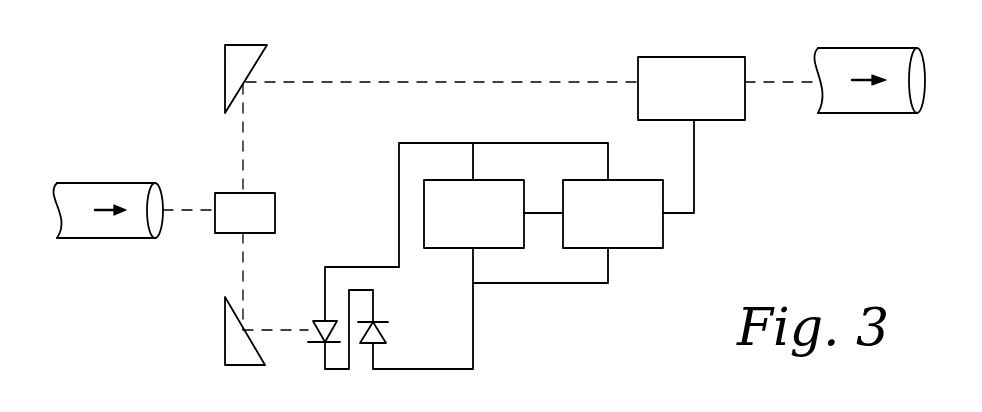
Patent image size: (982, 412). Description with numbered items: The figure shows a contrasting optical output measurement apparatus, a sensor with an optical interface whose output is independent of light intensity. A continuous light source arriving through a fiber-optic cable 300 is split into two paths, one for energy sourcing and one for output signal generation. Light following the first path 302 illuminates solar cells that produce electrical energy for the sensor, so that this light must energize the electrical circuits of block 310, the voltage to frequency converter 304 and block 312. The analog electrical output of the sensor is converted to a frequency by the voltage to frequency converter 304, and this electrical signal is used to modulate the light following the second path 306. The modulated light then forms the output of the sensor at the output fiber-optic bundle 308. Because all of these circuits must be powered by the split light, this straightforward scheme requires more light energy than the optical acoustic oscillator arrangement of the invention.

The fiber-optic cable 300 is at (100, 183).
The path 302 is at (243, 273).
The voltage to frequency converter 304 is at (650, 248).
The second path 306 is at (475, 82).
The output fiber-optic bundle 308 is at (865, 48).
The block 310 is at (507, 248).
The block 312 is at (697, 57).